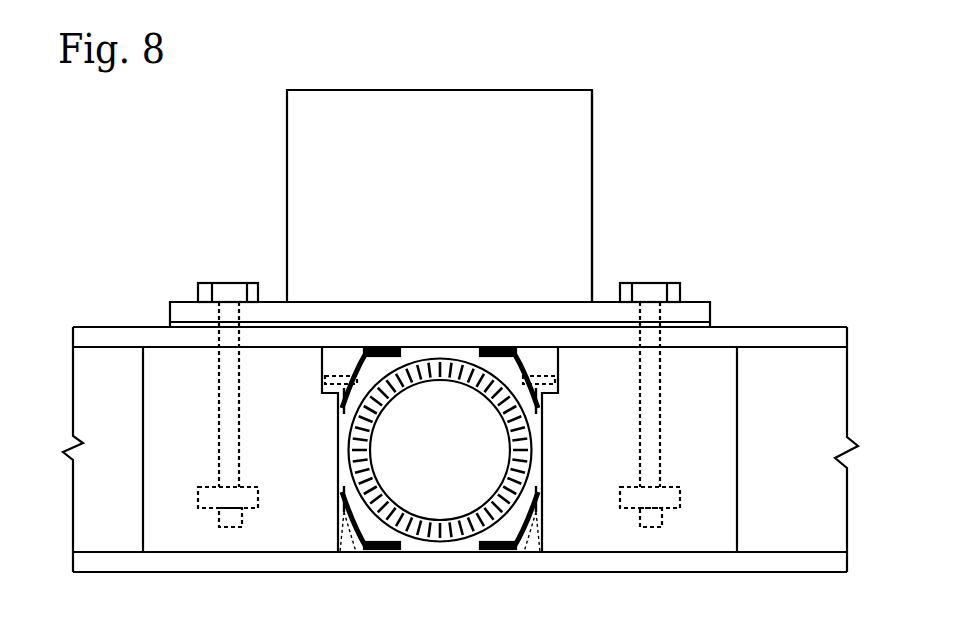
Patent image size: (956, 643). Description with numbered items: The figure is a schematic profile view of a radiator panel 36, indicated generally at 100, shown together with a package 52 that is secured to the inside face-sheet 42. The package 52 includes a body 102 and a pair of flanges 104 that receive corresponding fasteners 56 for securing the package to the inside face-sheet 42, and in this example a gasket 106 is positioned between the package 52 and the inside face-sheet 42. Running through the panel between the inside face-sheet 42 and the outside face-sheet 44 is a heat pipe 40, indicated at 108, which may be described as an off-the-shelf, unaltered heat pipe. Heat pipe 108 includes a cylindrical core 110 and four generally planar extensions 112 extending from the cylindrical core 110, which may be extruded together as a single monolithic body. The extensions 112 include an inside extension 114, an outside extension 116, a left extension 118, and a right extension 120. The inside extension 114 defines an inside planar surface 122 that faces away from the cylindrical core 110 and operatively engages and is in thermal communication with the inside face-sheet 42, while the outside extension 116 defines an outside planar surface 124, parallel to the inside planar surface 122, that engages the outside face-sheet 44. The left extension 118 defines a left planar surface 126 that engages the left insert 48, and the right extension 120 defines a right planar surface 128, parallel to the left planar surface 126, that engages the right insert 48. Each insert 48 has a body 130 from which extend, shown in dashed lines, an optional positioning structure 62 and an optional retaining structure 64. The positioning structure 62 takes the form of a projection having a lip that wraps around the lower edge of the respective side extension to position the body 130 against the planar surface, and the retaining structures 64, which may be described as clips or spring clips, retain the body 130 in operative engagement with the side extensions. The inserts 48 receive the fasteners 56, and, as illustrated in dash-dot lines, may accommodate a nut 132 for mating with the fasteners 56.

The radiator panel 36 is at (773, 57).
The heat pipe 40 is at (336, 554).
The inside face-sheet 42 is at (763, 327).
The outside face-sheet 44 is at (752, 572).
The insert 48 is at (141, 423).
The package 52 is at (486, 84).
The fastener 56 is at (232, 282).
The positioning structure 62 is at (380, 547).
The retaining structure 64 is at (335, 375).
The radiator panel 100 is at (688, 81).
The body 102 is at (593, 135).
The flange 104 is at (187, 302).
The gasket 106 is at (170, 327).
The heat pipe 108 is at (354, 553).
The cylindrical core 110 is at (368, 349).
The extension 112 is at (466, 344).
The inside extension 114 is at (400, 362).
The outside extension 116 is at (464, 554).
The left extension 118 is at (336, 500).
The right extension 120 is at (548, 410).
The inside planar surface 122 is at (432, 344).
The outside planar surface 124 is at (424, 554).
The left planar surface 126 is at (337, 452).
The right planar surface 128 is at (545, 450).
The body 130 is at (143, 500).
The nut 132 is at (207, 484).